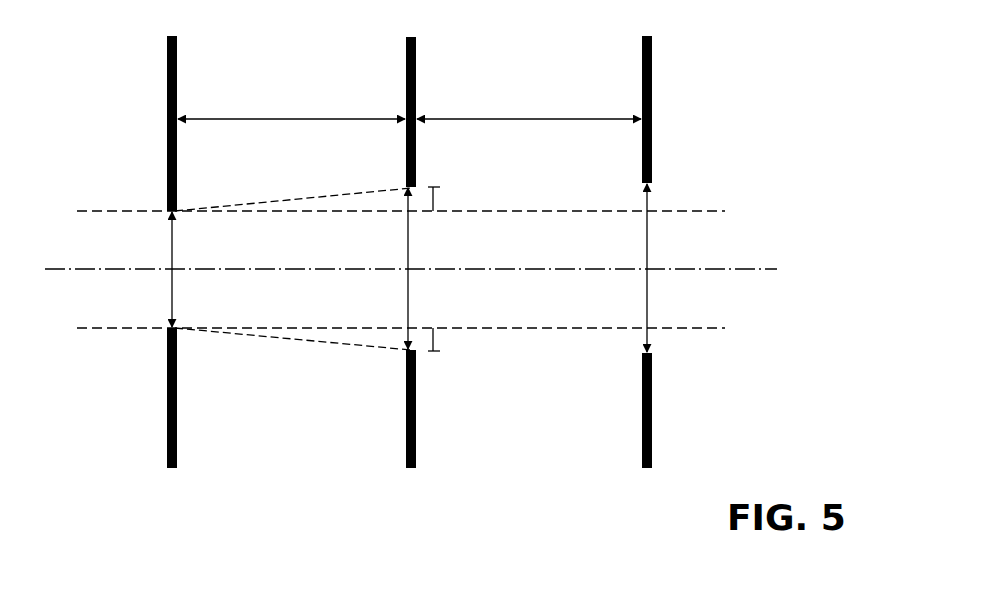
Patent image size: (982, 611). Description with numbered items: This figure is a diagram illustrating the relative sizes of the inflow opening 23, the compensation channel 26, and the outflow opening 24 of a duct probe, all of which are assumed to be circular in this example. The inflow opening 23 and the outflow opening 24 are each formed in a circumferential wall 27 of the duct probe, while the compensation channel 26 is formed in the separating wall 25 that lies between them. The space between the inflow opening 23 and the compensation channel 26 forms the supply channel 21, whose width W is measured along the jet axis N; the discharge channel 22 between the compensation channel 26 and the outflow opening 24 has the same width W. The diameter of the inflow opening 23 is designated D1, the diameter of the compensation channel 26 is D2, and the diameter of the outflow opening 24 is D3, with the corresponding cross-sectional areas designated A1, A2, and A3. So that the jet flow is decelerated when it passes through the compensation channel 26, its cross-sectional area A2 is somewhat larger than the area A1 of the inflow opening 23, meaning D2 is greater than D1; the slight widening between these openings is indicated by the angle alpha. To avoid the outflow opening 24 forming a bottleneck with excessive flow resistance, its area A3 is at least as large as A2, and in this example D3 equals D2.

The supply channel 21 is at (288, 456).
The discharge channel 22 is at (525, 456).
The inflow opening 23 is at (150, 342).
The outflow opening 24 is at (633, 355).
The separating wall 25 is at (405, 42).
The compensation channel 26 is at (392, 360).
The circumferential wall 27 is at (167, 42).
The jet axis N is at (770, 268).
The width W is at (409, 103).
The diameter of the inflow opening D1 is at (197, 269).
The diameter of the compensation channel D2 is at (433, 268).
The diameter of the outflow opening D3 is at (670, 268).
The cross-sectional area of the inflow opening A1 is at (150, 243).
The cross-sectional area of the compensation channel A2 is at (380, 243).
The cross-sectional area of the outflow opening A3 is at (626, 243).
The taper angle alpha is at (437, 196).